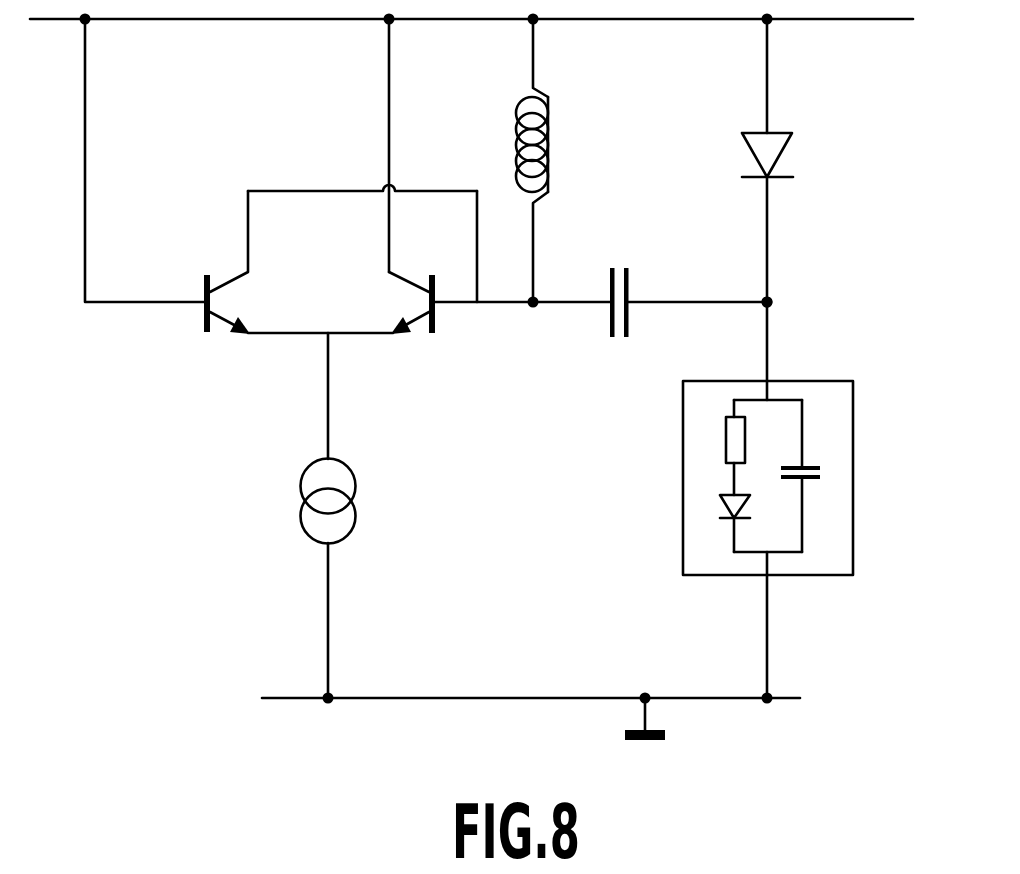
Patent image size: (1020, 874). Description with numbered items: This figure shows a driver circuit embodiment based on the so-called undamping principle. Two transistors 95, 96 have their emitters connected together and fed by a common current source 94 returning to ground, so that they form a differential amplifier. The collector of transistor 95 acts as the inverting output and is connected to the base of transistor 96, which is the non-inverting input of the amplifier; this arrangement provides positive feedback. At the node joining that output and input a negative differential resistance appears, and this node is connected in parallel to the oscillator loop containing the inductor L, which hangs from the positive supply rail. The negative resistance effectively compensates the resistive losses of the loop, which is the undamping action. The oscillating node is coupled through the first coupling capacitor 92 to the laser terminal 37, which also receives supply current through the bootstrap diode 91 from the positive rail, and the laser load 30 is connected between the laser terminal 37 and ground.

The load circuit block 30 is at (853, 490).
The laser terminal 37 is at (787, 295).
The bootstrap diode 91 is at (786, 160).
The first coupling capacitor 92 is at (682, 321).
The current source 94 is at (350, 515).
The transistor 95 is at (240, 262).
The transistor 96 is at (395, 303).
The inductor L is at (512, 160).